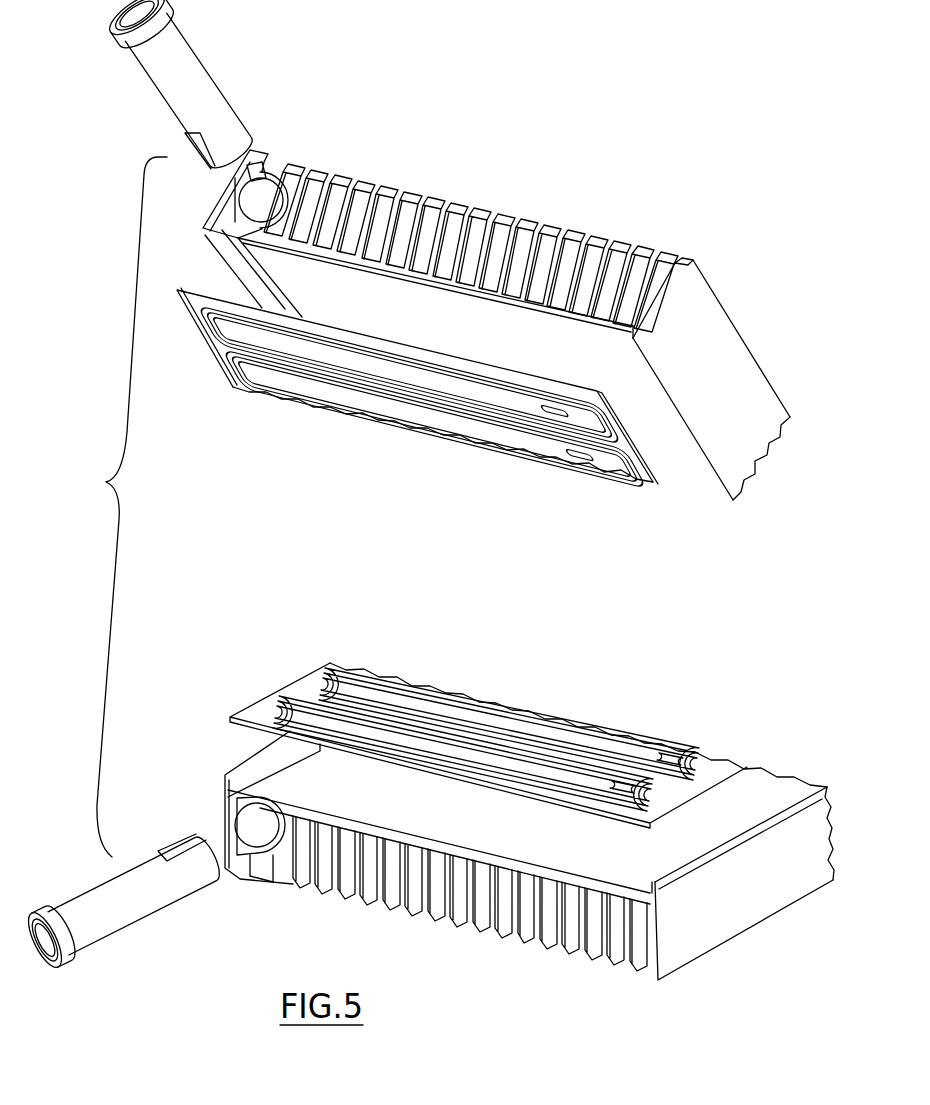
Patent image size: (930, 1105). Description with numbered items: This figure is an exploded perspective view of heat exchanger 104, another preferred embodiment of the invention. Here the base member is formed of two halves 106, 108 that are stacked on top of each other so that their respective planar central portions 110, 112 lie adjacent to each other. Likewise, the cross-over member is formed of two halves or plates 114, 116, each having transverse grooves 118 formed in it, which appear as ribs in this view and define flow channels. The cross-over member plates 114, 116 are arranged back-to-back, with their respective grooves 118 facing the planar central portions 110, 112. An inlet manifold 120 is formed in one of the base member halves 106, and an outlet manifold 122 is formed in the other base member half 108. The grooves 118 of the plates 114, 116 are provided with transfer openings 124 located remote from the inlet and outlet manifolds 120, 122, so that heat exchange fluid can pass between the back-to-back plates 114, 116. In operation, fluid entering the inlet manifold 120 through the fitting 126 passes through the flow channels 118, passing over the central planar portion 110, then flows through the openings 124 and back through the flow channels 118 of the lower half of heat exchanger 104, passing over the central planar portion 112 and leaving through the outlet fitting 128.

The heat exchanger 104 is at (112, 507).
The base member half 106 is at (473, 343).
The base member half 108 is at (491, 849).
The planar central portion 110 is at (679, 458).
The planar central portion 112 is at (771, 800).
The cross-over member plate 114 is at (216, 342).
The cross-over member plate 116 is at (293, 688).
The transverse grooves 118 is at (213, 328).
The inlet manifold 120 is at (258, 207).
The outlet manifold 122 is at (255, 824).
The transfer openings 124 is at (549, 412).
The fitting 126 is at (211, 92).
The outlet fitting 128 is at (164, 890).